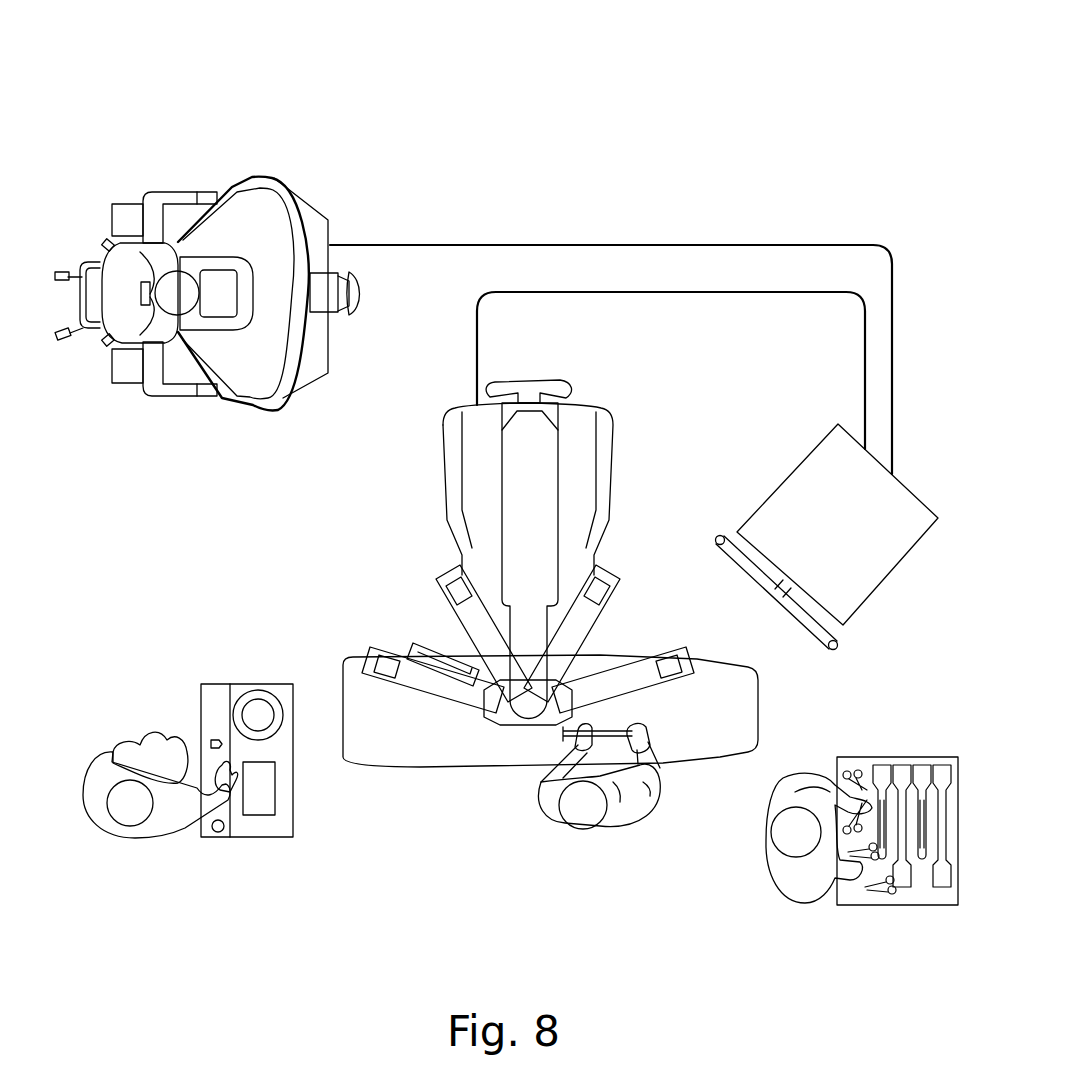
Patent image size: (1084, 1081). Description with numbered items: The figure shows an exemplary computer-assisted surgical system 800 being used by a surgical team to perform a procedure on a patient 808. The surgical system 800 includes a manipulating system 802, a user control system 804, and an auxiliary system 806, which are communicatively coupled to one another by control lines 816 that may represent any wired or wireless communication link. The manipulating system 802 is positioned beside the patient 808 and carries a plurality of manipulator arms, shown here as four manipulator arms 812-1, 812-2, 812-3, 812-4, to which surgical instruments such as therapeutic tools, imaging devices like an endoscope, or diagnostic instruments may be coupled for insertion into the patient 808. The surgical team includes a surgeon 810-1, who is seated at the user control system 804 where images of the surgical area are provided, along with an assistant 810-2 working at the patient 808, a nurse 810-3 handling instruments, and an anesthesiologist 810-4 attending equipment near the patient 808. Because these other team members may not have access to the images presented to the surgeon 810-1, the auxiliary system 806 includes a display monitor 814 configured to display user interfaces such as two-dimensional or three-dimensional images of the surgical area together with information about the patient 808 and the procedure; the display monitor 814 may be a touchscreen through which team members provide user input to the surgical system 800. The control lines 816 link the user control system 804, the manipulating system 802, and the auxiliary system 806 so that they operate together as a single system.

The computer-assisted surgical system 800 is at (787, 74).
The manipulating system 802 is at (451, 425).
The user control system 804 is at (234, 192).
The auxiliary system 806 is at (798, 478).
The patient 808 is at (417, 740).
The surgeon 810-1 is at (118, 336).
The assistant 810-2 is at (548, 806).
The nurse 810-3 is at (782, 866).
The anesthesiologist 810-4 is at (145, 836).
The manipulator arm 812-1 is at (368, 652).
The manipulator arm 812-2 is at (440, 578).
The manipulator arm 812-3 is at (612, 577).
The manipulator arm 812-4 is at (682, 650).
The display monitor 814 is at (813, 650).
The control lines 816 is at (584, 244).